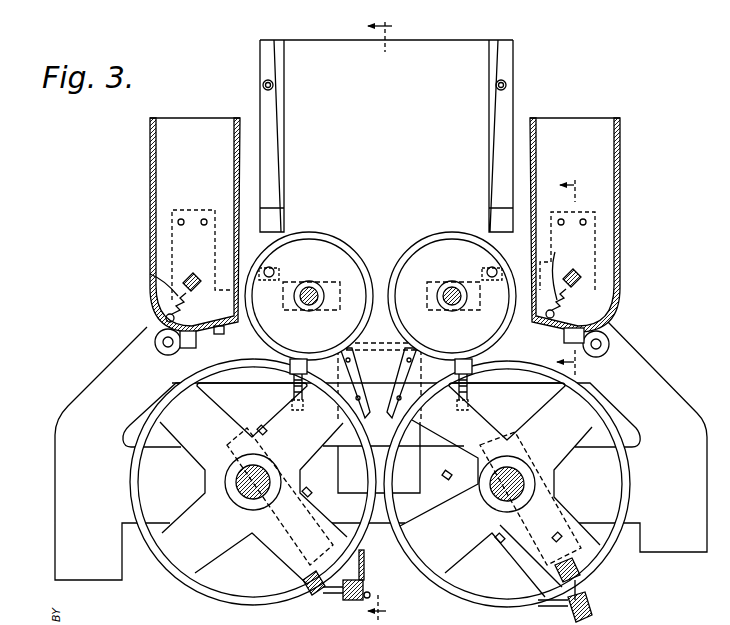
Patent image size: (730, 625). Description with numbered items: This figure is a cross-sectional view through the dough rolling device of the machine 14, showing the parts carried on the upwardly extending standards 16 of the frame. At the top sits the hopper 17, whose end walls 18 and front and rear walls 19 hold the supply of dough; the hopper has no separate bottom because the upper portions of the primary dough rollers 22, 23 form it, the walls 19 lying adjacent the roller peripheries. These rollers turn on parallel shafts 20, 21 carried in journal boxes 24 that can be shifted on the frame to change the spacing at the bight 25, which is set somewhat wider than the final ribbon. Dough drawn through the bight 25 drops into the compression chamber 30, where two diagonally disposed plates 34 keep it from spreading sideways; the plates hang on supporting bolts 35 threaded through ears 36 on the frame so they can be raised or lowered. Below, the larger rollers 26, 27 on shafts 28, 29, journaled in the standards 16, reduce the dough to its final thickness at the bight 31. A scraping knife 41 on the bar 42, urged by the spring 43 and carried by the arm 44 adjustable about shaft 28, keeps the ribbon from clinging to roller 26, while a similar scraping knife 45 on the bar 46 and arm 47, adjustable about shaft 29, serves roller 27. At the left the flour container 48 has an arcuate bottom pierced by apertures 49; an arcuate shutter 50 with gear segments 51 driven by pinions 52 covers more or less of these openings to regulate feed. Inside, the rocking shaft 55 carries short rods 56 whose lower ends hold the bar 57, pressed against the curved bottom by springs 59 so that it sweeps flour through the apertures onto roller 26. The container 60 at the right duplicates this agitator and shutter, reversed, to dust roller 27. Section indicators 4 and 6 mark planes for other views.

The section line 4- 4 is at (368, 323).
The section line 6- 6 is at (557, 271).
The machine 14 is at (723, 357).
The standards 16 is at (381, 451).
The hopper 17 is at (386, 86).
The end walls 18 is at (452, 56).
The front and rear walls 19 is at (283, 178).
The shaft 20 is at (308, 288).
The shaft 21 is at (455, 290).
The primary dough roller 22 is at (311, 234).
The primary dough roller 23 is at (453, 234).
The journal boxes 24 is at (335, 284).
The bight 25 is at (381, 290).
The roller 26 is at (219, 592).
The roller 27 is at (440, 592).
The shaft 28 is at (261, 477).
The shaft 29 is at (514, 478).
The compression chamber 30 is at (378, 383).
The bight 31 is at (382, 482).
The diagonally disposed plates 34 is at (405, 367).
The supporting bolts 35 is at (294, 404).
The ears 36 is at (283, 378).
The scraping knife 41 is at (369, 590).
The bar 42 is at (343, 597).
The spring 43 is at (309, 594).
The arm 44 is at (280, 500).
The scraping knife 45 is at (538, 602).
The bar 46 is at (593, 606).
The arm 47 is at (520, 567).
The container 48 is at (148, 190).
The apertures 49 is at (198, 306).
The shutter 50 is at (148, 294).
The arcuate gear segments 51 is at (147, 327).
The pinions 52 is at (162, 350).
The shaft 55 is at (186, 280).
The short rods 56 is at (201, 281).
The bar 57 is at (148, 318).
The springs 59 is at (150, 274).
The container 60 is at (620, 212).